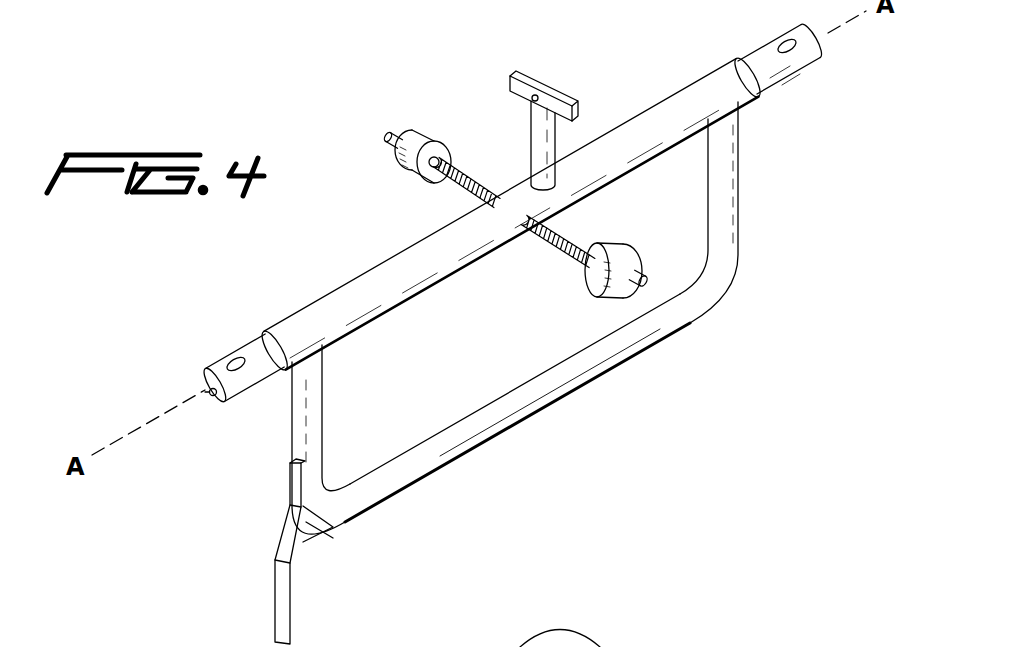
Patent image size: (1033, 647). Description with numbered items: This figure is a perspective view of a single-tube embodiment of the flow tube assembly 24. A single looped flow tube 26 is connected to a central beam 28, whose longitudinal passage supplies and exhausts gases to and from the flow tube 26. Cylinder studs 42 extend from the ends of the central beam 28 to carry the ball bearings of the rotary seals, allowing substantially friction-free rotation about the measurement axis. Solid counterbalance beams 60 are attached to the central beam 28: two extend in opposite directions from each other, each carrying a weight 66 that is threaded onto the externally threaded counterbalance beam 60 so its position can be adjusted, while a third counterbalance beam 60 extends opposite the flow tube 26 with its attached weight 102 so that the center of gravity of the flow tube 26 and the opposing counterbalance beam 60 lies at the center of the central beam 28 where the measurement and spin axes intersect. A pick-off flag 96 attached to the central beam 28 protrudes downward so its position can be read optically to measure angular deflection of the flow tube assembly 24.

The flow tube assembly 24 is at (588, 393).
The flow tube 26 is at (732, 232).
The central beam 28 is at (655, 112).
The cylinder stud 42 is at (210, 396).
The counterbalance beam 60 is at (527, 117).
The weight 66 is at (432, 141).
The pick-off flag 96 is at (277, 600).
The weight 102 is at (527, 77).